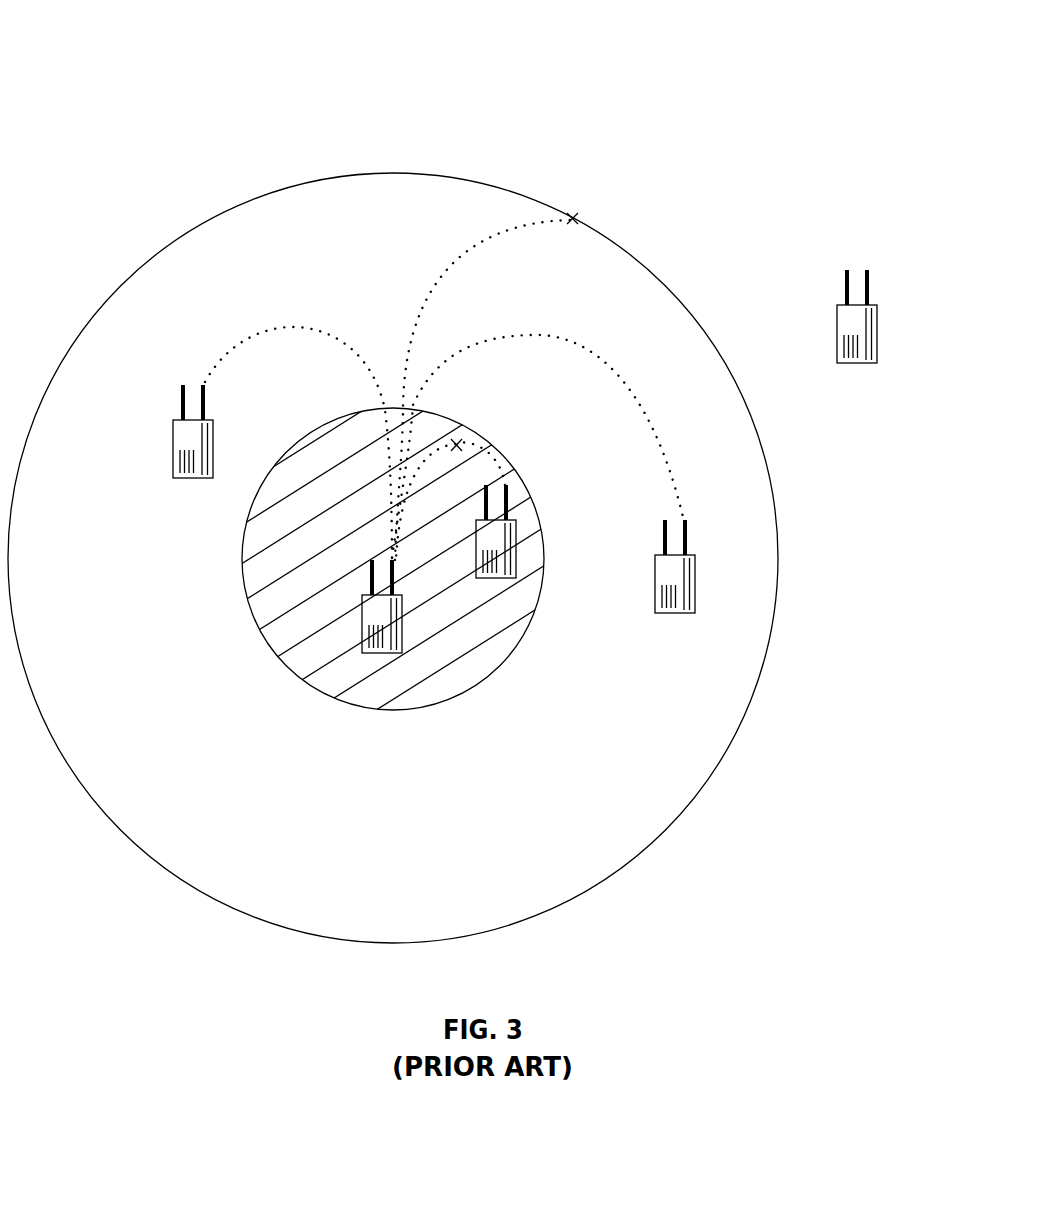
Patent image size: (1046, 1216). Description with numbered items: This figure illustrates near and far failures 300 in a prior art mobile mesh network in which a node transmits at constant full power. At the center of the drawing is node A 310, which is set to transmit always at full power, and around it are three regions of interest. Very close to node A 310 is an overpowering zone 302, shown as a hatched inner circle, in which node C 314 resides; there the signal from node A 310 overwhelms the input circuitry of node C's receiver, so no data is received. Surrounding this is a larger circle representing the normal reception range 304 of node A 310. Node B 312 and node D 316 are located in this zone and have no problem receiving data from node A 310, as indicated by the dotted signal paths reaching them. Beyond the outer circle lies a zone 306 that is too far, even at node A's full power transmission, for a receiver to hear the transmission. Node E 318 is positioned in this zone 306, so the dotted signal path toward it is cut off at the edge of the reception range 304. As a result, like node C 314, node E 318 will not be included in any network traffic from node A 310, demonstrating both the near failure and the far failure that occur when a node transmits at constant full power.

The near and far failures 300 is at (84, 35).
The overpowering zone 302 is at (334, 445).
The normal reception range 304 is at (585, 280).
The zone 306 is at (870, 377).
The node A 310 is at (352, 614).
The node B 312 is at (185, 484).
The node C 314 is at (488, 583).
The node D 316 is at (670, 620).
The node E 318 is at (852, 368).